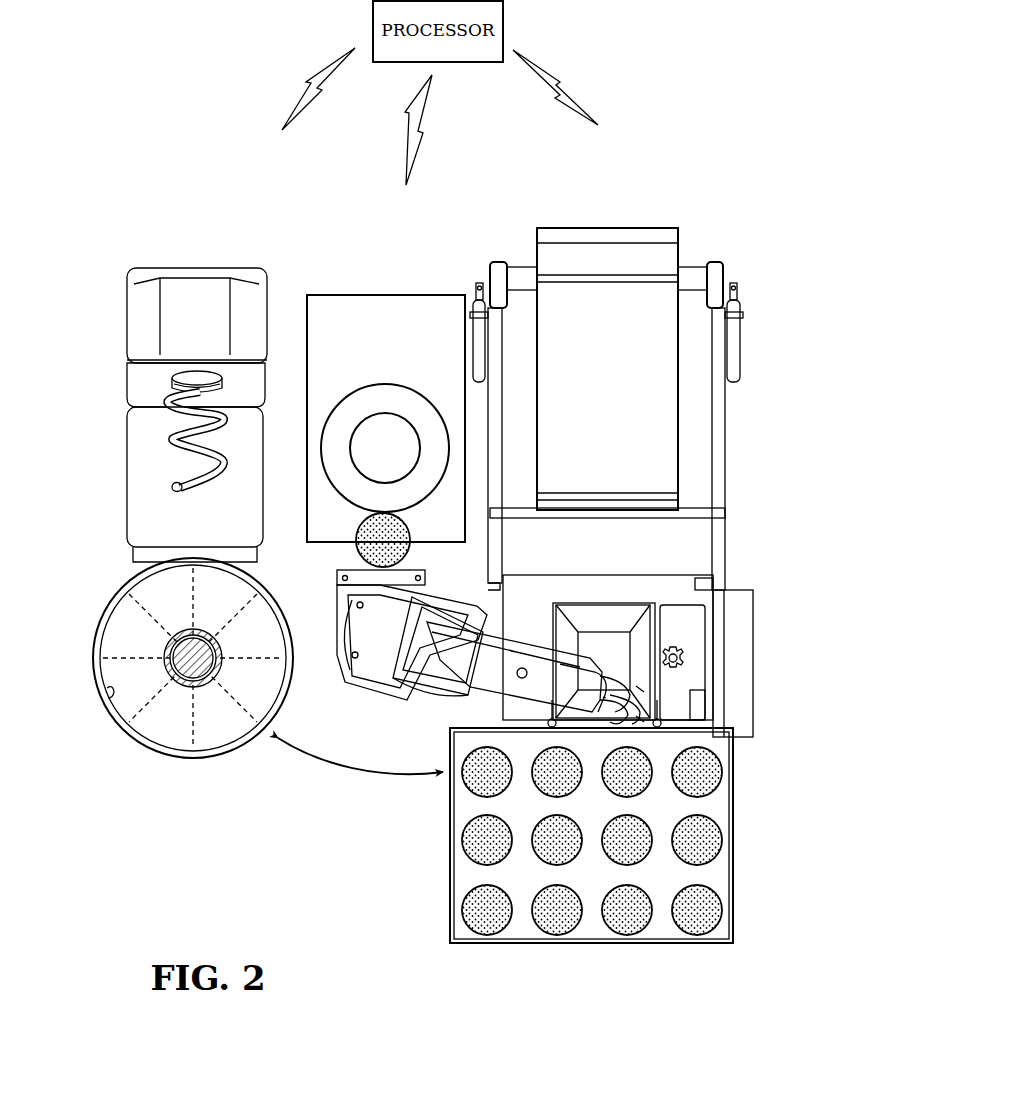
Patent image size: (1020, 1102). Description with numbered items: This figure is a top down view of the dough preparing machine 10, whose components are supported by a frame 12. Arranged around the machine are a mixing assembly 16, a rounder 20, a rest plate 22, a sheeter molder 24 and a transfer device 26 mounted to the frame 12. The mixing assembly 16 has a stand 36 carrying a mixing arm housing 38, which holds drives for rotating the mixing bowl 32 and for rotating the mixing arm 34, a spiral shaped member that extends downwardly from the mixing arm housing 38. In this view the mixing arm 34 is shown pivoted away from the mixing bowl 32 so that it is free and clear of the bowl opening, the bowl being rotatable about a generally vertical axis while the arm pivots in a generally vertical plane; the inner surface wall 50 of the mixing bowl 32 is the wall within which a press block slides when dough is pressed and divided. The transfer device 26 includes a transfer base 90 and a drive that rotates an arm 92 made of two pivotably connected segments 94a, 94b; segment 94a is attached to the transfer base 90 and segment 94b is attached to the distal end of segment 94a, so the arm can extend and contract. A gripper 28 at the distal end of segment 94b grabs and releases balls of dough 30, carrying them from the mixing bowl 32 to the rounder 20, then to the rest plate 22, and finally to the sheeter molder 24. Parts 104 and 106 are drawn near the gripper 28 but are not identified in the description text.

The dough preparing machine 10 is at (616, 434).
The frame 12 is at (466, 262).
The mixing assembly 16 is at (155, 534).
The rounder 20 is at (386, 431).
The rest plate 22 is at (616, 865).
The sheeter molder 24 is at (607, 369).
The transfer device 26 is at (567, 641).
The gripper 28 is at (597, 735).
The balls of dough 30 is at (701, 940).
The mixing bowl 32 is at (145, 745).
The mixing arm 34 is at (176, 443).
The stand 36 is at (124, 505).
The mixing arm housing 38 is at (127, 307).
The inner surface wall 50 is at (112, 692).
The transfer base 90 is at (342, 668).
The arm 92 is at (425, 663).
The segment 94a is at (510, 650).
The segment 94b is at (603, 697).
The gripper finger 104 is at (640, 690).
The gripper finger 106 is at (642, 720).